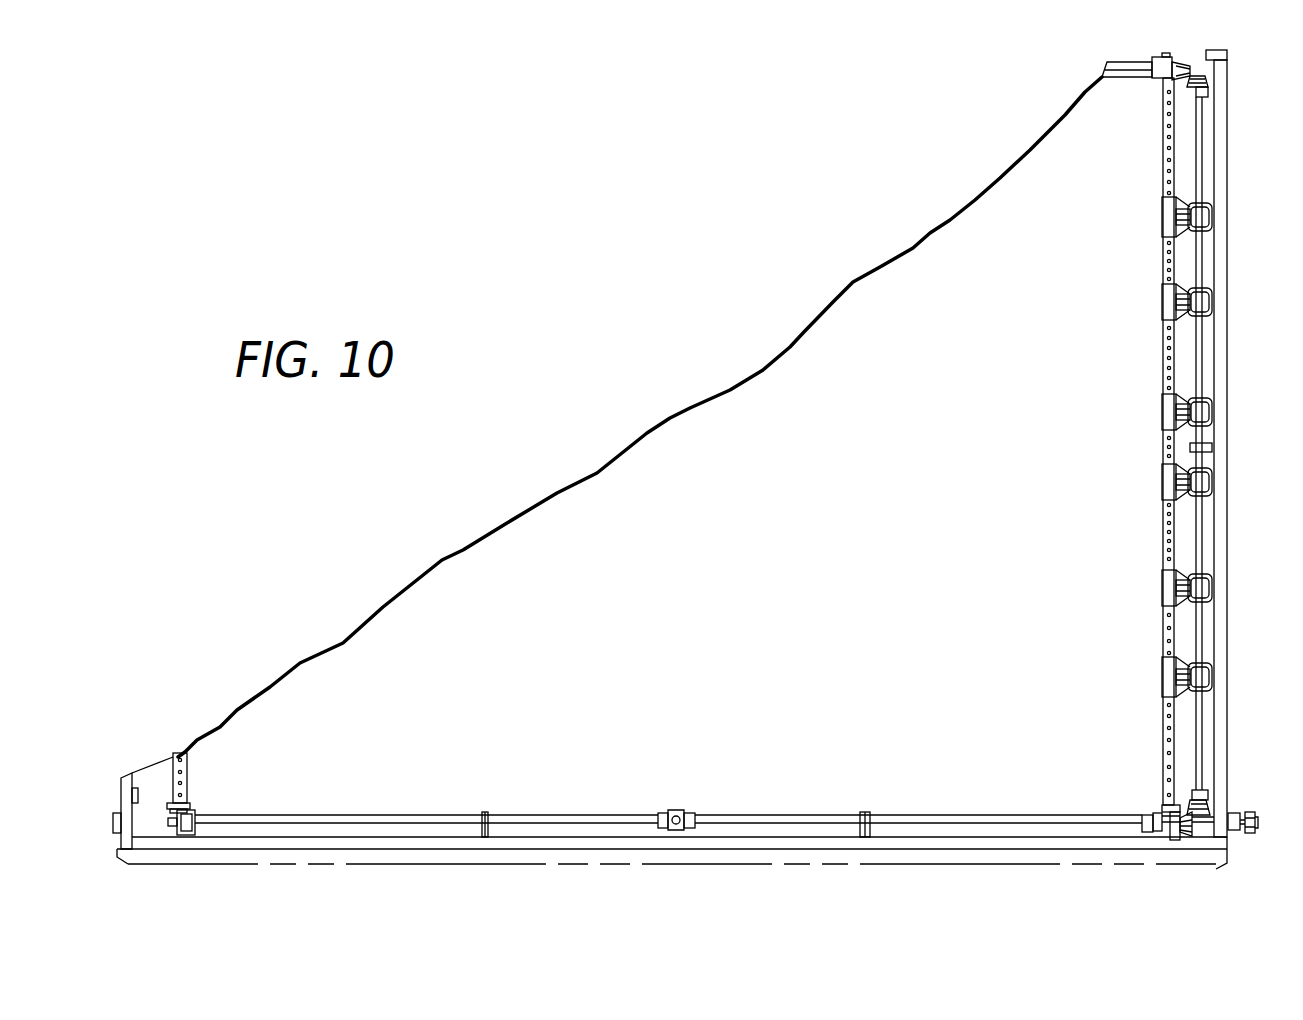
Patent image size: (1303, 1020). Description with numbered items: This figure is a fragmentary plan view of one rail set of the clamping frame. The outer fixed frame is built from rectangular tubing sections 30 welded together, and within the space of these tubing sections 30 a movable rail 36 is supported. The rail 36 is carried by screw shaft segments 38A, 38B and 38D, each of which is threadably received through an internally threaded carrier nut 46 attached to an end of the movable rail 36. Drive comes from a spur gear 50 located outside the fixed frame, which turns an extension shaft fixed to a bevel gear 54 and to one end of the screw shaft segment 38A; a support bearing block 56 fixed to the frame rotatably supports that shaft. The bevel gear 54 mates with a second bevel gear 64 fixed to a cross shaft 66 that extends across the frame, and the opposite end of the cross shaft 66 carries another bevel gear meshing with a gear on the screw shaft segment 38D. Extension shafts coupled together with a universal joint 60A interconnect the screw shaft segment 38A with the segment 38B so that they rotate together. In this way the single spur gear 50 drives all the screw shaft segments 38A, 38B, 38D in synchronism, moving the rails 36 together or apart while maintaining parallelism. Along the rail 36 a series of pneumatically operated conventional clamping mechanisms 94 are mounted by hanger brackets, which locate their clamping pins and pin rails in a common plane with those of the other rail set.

The rectangular tubing section 30 is at (117, 786).
The movable Y rail 36 is at (194, 760).
The carrier nut 46 is at (192, 816).
The screw shaft segment 38A is at (889, 813).
The screw shaft segment 38B is at (336, 819).
The screw shaft segment 38D is at (1121, 76).
The universal joint 60A is at (682, 809).
The second bevel gear 64 is at (1188, 801).
The bevel gear 54 is at (1191, 835).
The support bearing block 56 is at (1233, 812).
The spur gear 50 is at (1276, 806).
The cross shaft 66 is at (1194, 636).
The clamping mechanism 94 is at (1208, 286).